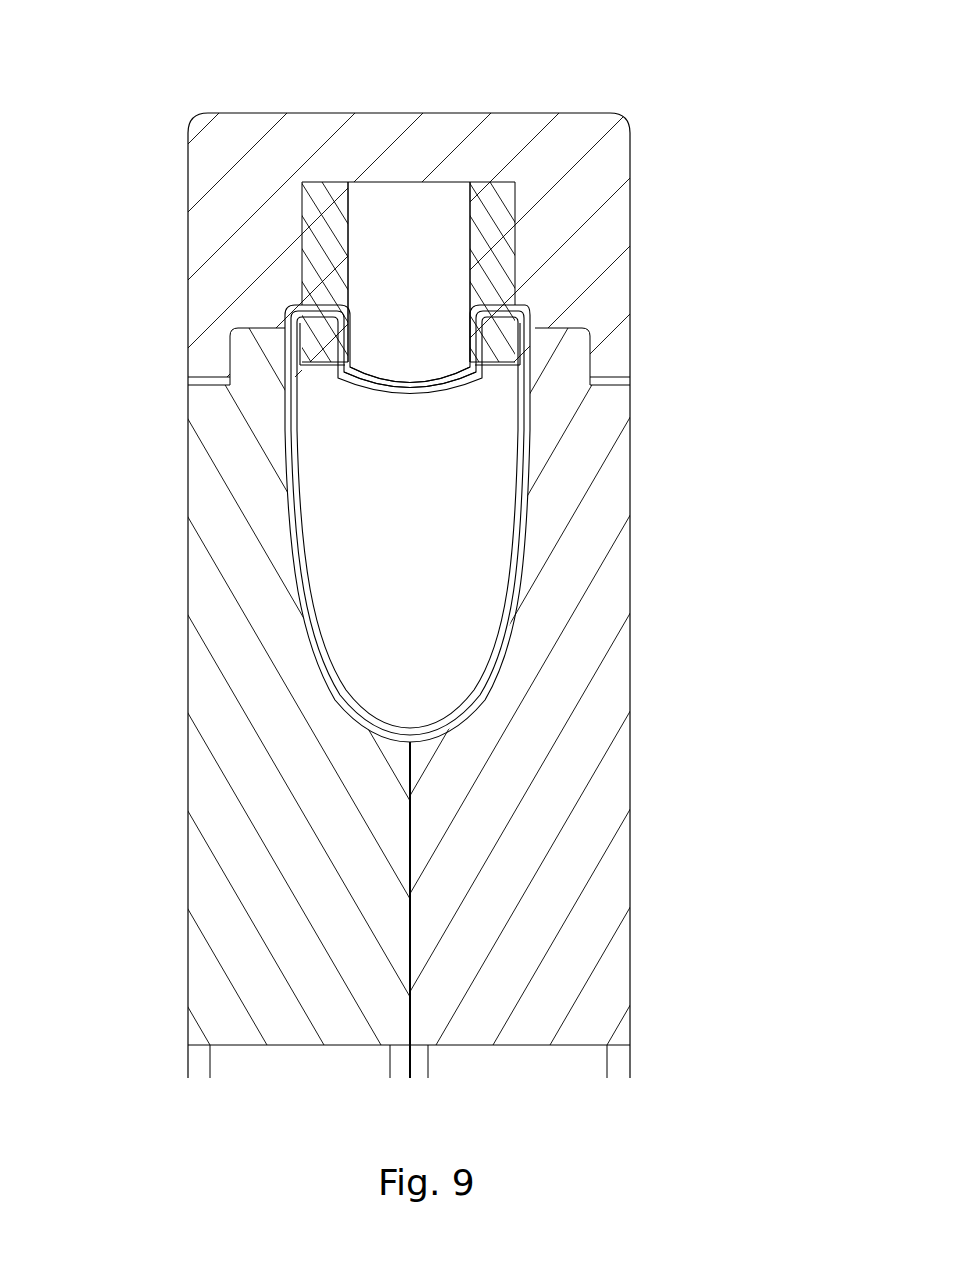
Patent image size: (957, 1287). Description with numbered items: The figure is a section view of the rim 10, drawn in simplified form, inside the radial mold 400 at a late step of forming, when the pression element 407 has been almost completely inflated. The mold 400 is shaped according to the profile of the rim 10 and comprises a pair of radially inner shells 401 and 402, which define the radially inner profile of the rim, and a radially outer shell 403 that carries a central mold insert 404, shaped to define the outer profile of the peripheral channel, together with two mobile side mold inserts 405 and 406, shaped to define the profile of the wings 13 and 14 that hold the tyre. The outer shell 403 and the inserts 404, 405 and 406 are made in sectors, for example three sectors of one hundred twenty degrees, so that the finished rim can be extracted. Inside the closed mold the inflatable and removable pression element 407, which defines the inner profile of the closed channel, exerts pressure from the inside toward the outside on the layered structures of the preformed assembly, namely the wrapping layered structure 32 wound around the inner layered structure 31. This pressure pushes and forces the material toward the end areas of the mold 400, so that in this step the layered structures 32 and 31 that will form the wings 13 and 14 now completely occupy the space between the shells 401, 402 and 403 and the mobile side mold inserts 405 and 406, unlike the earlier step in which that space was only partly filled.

The radial mold 400 is at (140, 302).
The radially inner shell 401 is at (227, 847).
The radially inner shell 402 is at (600, 868).
The radially outer shell 403 is at (608, 307).
The central mold insert 404 is at (408, 228).
The mobile side mold insert 405 is at (318, 227).
The mobile side mold insert 406 is at (500, 228).
The pression element 407 is at (433, 602).
The rim 10 is at (272, 494).
The wing 13 is at (272, 340).
The wing 14 is at (548, 320).
The inner layered structure 31 is at (522, 340).
The wrapping layered structure 32 is at (523, 365).